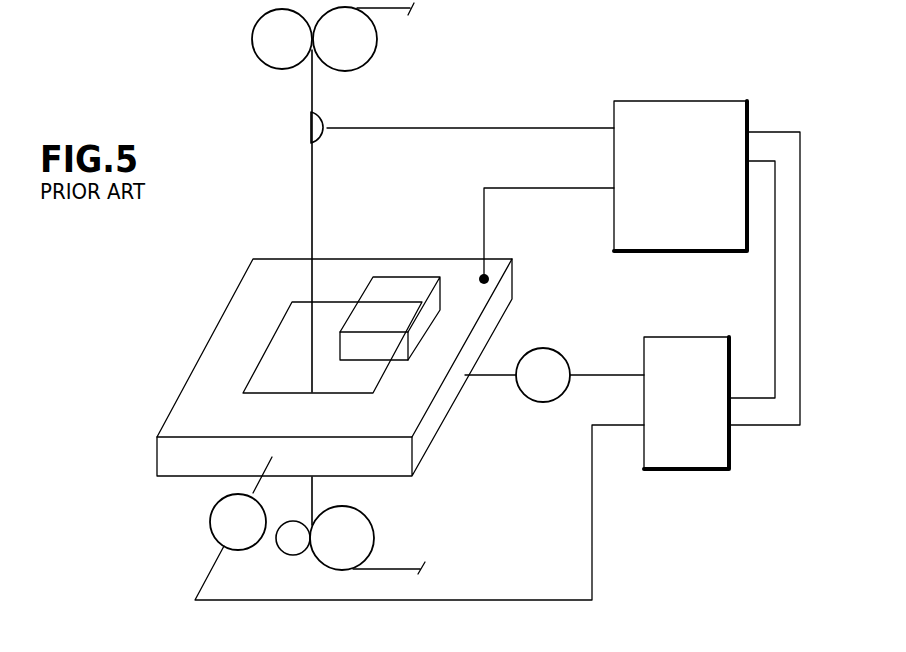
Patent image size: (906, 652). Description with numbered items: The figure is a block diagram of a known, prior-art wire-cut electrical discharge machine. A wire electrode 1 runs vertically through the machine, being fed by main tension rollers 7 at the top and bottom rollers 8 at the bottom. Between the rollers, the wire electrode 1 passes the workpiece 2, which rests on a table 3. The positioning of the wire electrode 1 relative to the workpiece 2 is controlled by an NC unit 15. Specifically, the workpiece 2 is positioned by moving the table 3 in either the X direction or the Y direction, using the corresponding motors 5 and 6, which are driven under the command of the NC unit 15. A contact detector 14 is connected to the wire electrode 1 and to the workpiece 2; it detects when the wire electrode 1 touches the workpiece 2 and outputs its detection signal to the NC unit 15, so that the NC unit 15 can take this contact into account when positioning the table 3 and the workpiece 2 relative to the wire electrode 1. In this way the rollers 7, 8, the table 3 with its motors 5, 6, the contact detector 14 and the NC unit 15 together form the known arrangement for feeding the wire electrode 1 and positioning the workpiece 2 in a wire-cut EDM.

The wire electrode 1 is at (310, 160).
The workpiece 2 is at (398, 285).
The table 3 is at (200, 377).
The motor 5 is at (564, 352).
The motor 6 is at (210, 528).
The main tension rollers 7 is at (368, 60).
The bottom rollers 8 is at (354, 532).
The contact detector 14 is at (662, 101).
The NC unit 15 is at (683, 337).